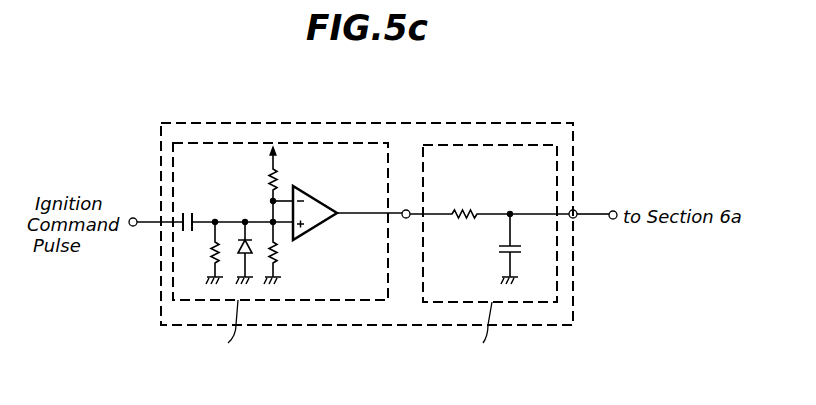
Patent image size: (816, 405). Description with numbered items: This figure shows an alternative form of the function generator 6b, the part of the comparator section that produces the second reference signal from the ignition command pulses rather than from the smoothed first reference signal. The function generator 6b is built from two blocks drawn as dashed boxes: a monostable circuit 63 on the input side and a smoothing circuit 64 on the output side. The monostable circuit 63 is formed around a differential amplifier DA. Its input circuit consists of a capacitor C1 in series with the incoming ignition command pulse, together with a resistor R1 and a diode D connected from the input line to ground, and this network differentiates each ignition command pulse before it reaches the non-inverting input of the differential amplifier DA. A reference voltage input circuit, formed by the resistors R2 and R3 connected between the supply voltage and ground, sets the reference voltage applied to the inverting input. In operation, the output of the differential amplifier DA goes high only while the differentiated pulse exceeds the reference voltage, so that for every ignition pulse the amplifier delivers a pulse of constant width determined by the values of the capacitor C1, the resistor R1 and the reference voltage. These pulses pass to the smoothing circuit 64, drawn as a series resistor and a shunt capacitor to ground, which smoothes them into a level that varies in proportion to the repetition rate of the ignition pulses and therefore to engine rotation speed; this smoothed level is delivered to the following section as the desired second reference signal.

The function generator 6b is at (492, 123).
The monostable circuit 63 is at (367, 143).
The smoothing circuit 64 is at (455, 145).
The capacitor C1 is at (189, 212).
The resistor R1 is at (203, 253).
The resistor R2 is at (286, 184).
The resistor R3 is at (284, 253).
The diode D is at (239, 253).
The differential amplifier DA is at (306, 196).